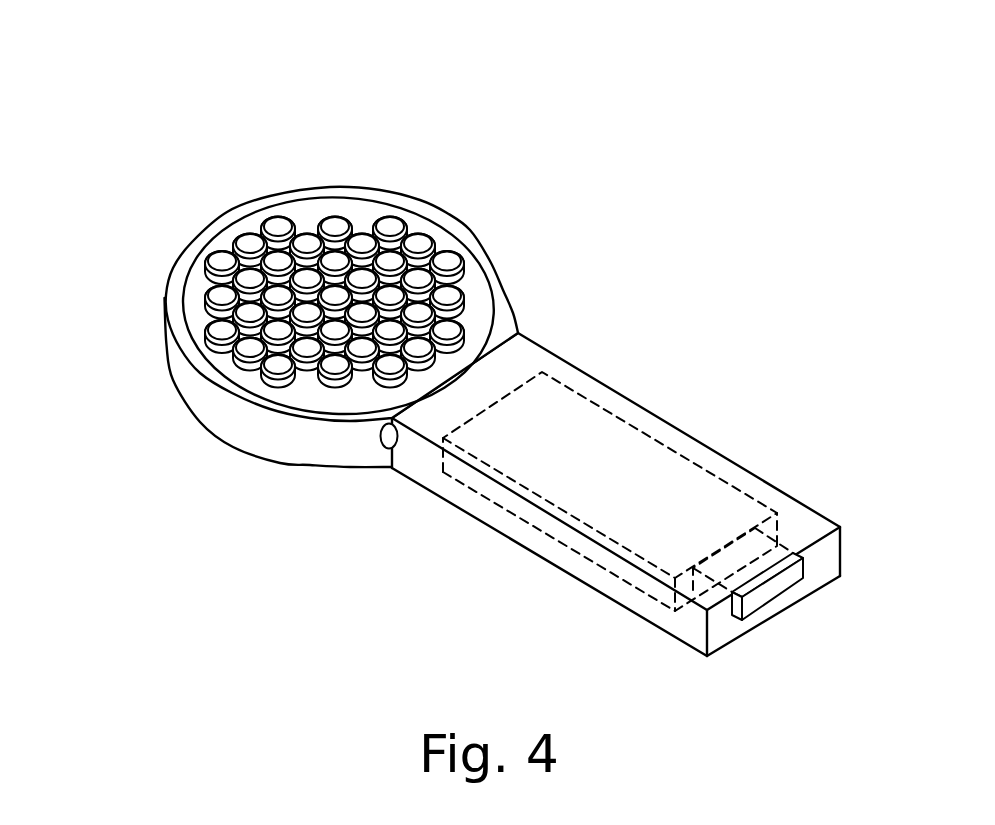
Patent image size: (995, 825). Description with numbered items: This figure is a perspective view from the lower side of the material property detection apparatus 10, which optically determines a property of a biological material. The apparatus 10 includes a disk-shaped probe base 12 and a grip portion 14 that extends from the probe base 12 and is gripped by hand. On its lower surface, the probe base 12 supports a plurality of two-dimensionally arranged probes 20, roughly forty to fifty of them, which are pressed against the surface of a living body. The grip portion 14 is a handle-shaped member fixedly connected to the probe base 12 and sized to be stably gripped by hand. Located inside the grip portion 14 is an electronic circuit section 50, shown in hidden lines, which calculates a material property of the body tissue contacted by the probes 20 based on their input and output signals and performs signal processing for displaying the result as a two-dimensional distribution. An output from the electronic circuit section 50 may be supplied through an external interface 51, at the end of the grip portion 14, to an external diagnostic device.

The material property detection apparatus 10 is at (212, 172).
The probe base 12 is at (497, 283).
The grip portion 14 is at (684, 438).
The probes 20 is at (216, 330).
The electronic circuit section 50 is at (570, 480).
The external interface 51 is at (787, 590).